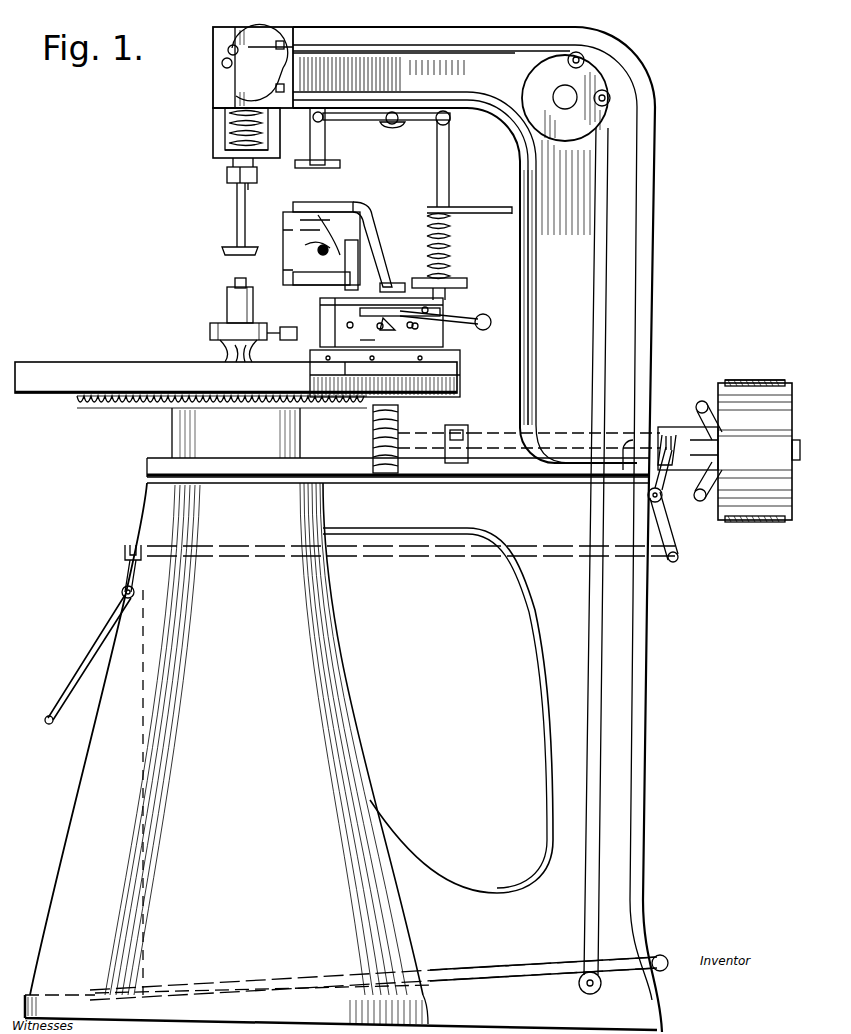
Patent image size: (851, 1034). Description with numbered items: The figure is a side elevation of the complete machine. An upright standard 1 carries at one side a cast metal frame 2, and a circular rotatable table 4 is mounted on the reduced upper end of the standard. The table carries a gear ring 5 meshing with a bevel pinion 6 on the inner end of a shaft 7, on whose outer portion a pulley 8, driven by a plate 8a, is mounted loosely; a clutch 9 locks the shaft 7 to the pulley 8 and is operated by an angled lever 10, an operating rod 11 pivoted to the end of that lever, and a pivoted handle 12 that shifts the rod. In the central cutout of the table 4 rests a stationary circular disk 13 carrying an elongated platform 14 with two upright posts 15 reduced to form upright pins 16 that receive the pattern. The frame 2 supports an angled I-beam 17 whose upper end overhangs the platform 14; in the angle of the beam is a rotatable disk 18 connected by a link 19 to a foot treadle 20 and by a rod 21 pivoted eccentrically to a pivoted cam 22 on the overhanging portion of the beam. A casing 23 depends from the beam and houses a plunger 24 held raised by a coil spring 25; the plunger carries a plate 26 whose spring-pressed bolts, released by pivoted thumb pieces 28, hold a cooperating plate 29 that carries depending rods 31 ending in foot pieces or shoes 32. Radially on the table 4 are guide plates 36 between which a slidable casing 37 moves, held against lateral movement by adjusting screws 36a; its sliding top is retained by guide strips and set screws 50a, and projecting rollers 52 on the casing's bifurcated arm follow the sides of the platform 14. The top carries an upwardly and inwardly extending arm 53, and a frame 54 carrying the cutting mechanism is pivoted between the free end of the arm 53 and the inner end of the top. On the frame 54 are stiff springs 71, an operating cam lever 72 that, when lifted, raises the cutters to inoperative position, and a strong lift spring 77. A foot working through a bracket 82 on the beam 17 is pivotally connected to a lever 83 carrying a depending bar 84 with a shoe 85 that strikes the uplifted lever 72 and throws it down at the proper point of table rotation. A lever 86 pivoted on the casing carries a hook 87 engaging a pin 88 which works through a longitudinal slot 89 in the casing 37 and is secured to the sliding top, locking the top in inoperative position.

The upright standard 1 is at (341, 744).
The cast metal frame 2 is at (438, 693).
The circular rotatable table 4 is at (236, 377).
The gear ring 5 is at (150, 409).
The bevel pinion 6 is at (400, 416).
The shaft 7 is at (489, 432).
The pulley 8 is at (759, 451).
The plate 8a is at (750, 380).
The clutch 9 is at (690, 425).
The angled lever 10 is at (676, 528).
The operating rod 11 is at (430, 557).
The pivoted handle 12 is at (116, 606).
The circular disk 13 is at (245, 352).
The elongated platform 14 is at (210, 328).
The upright posts 15 is at (227, 308).
The upright projecting pins 16 is at (235, 281).
The angled I-beam 17 is at (546, 247).
The rotatable disk 18 is at (512, 100).
The link 19 is at (596, 688).
The foot treadle 20 is at (464, 966).
The rod 21 is at (500, 58).
The pivoted cam 22 is at (253, 66).
The casing 23 is at (213, 121).
The plunger 24 is at (229, 133).
The coil spring 25 is at (224, 150).
The plate 26 is at (258, 175).
The pivoted thumb pieces 28 is at (228, 178).
The coöperating plate 29 is at (250, 185).
The depending rod 31 is at (237, 222).
The foot piece or shoe 32 is at (230, 252).
The guide plates 36 is at (462, 366).
The adjusting screws 36a is at (346, 367).
The slidable casing 37 is at (359, 344).
The set screws 50a is at (338, 310).
The projecting rollers 52 is at (286, 327).
The upwardly and inwardly extending arm 53 is at (376, 234).
The frame 54 is at (340, 225).
The stiff springs 71 is at (322, 260).
The operating cam lever 72 is at (325, 215).
The strong lift spring 77 is at (365, 272).
The bracket 82 is at (478, 210).
The lever 83 is at (415, 125).
The depending bar 84 is at (326, 152).
The shoe 85 is at (340, 165).
The lever 86 is at (434, 318).
The hook 87 is at (450, 300).
The pin 88 is at (415, 329).
The longitudinal slot 89 is at (385, 328).